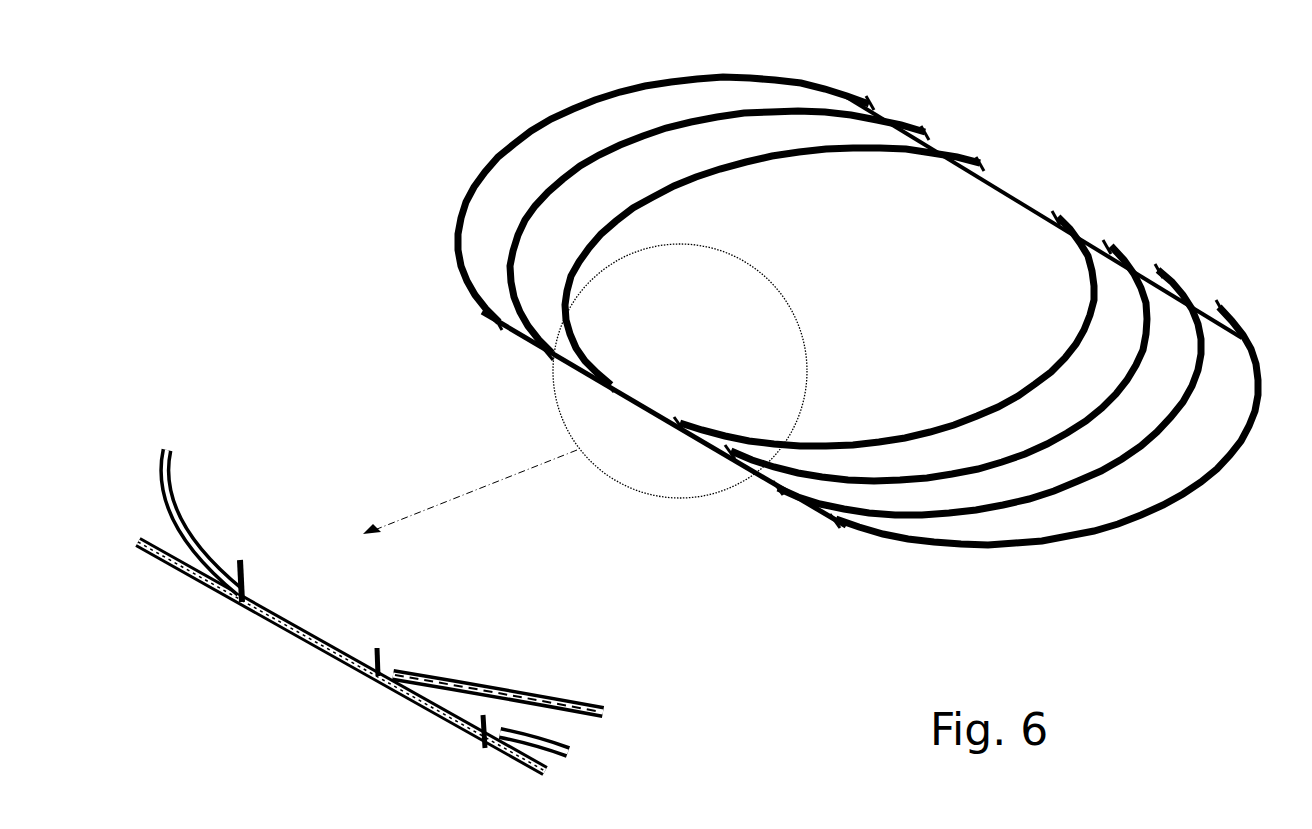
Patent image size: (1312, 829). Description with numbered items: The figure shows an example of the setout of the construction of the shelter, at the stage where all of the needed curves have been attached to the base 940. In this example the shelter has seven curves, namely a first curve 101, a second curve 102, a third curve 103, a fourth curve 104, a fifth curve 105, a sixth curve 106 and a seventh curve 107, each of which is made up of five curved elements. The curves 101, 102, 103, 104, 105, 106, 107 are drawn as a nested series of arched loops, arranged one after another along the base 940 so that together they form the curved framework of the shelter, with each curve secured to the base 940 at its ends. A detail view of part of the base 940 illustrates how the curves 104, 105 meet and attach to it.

The curve 101 is at (1242, 332).
The curve 102 is at (1176, 276).
The curve 103 is at (1118, 246).
The curve 104 is at (1062, 216).
The curve 105 is at (970, 161).
The curve 106 is at (928, 130).
The curve 107 is at (866, 99).
The base 940 is at (513, 336).